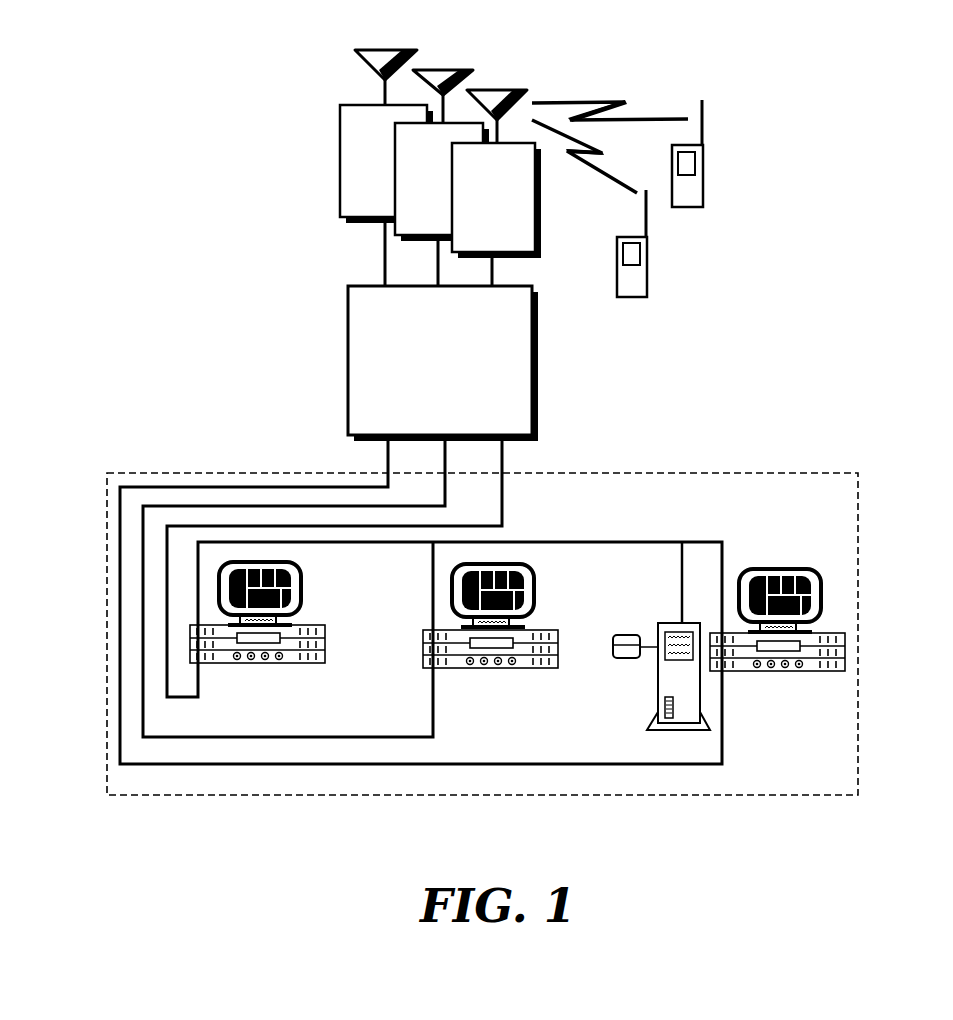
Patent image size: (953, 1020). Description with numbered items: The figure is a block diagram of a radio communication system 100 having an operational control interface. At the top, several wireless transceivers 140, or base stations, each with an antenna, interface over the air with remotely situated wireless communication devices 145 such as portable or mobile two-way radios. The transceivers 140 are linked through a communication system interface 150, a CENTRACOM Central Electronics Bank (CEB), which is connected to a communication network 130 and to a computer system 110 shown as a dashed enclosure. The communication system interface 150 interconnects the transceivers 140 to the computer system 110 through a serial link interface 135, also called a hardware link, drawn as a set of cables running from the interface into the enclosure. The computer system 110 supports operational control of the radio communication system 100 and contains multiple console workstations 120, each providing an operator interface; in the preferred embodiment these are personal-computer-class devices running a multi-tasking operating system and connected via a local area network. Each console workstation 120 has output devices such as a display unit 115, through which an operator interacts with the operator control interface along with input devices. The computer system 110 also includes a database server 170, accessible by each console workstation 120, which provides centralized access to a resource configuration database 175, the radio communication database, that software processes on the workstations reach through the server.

The radio communication system 100 is at (145, 853).
The computer system 110 is at (830, 473).
The display unit 115 is at (447, 600).
The console workstation 120 is at (285, 665).
The communication network 130 is at (673, 542).
The serial link interface 135 is at (332, 527).
The wireless transceiver 140 is at (450, 200).
The wireless communication device 145 is at (707, 170).
The communication system interface 150 is at (348, 347).
The database server 170 is at (655, 690).
The resource configuration database 175 is at (613, 660).